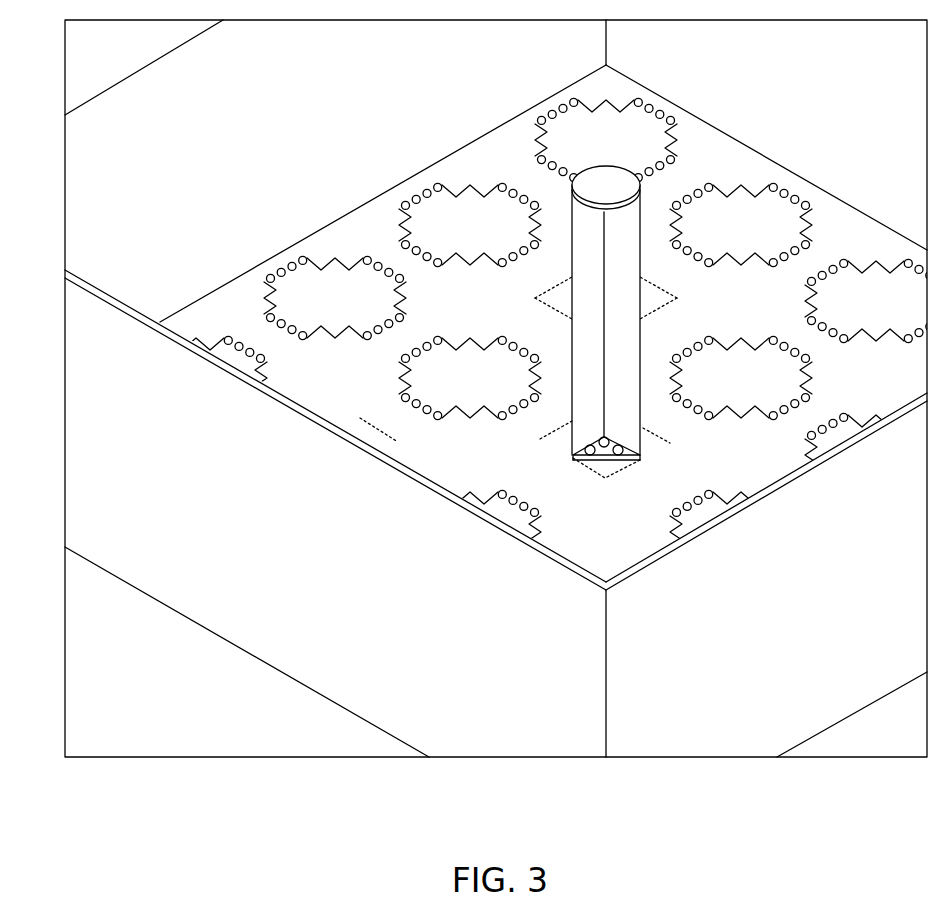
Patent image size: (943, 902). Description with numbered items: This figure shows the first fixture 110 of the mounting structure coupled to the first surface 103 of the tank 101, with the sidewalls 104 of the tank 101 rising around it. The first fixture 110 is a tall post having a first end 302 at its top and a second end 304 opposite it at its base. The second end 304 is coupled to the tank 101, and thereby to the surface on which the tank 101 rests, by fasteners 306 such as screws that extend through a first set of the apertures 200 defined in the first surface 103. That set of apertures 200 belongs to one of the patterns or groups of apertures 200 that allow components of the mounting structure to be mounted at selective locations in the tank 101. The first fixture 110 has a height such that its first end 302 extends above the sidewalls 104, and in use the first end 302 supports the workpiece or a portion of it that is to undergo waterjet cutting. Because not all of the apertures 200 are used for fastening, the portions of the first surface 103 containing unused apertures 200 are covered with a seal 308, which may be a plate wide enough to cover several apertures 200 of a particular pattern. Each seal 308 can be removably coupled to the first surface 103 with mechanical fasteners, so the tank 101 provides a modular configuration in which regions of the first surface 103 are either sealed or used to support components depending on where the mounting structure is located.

The tank 101 is at (496, 388).
The first surface 103 is at (496, 323).
The sidewalls 104 is at (51, 331).
The first fixture 110 is at (576, 304).
The apertures 200 is at (598, 463).
The first end 302 is at (598, 198).
The second end 304 is at (564, 443).
The fasteners 306 is at (645, 442).
The seal 308 is at (534, 335).